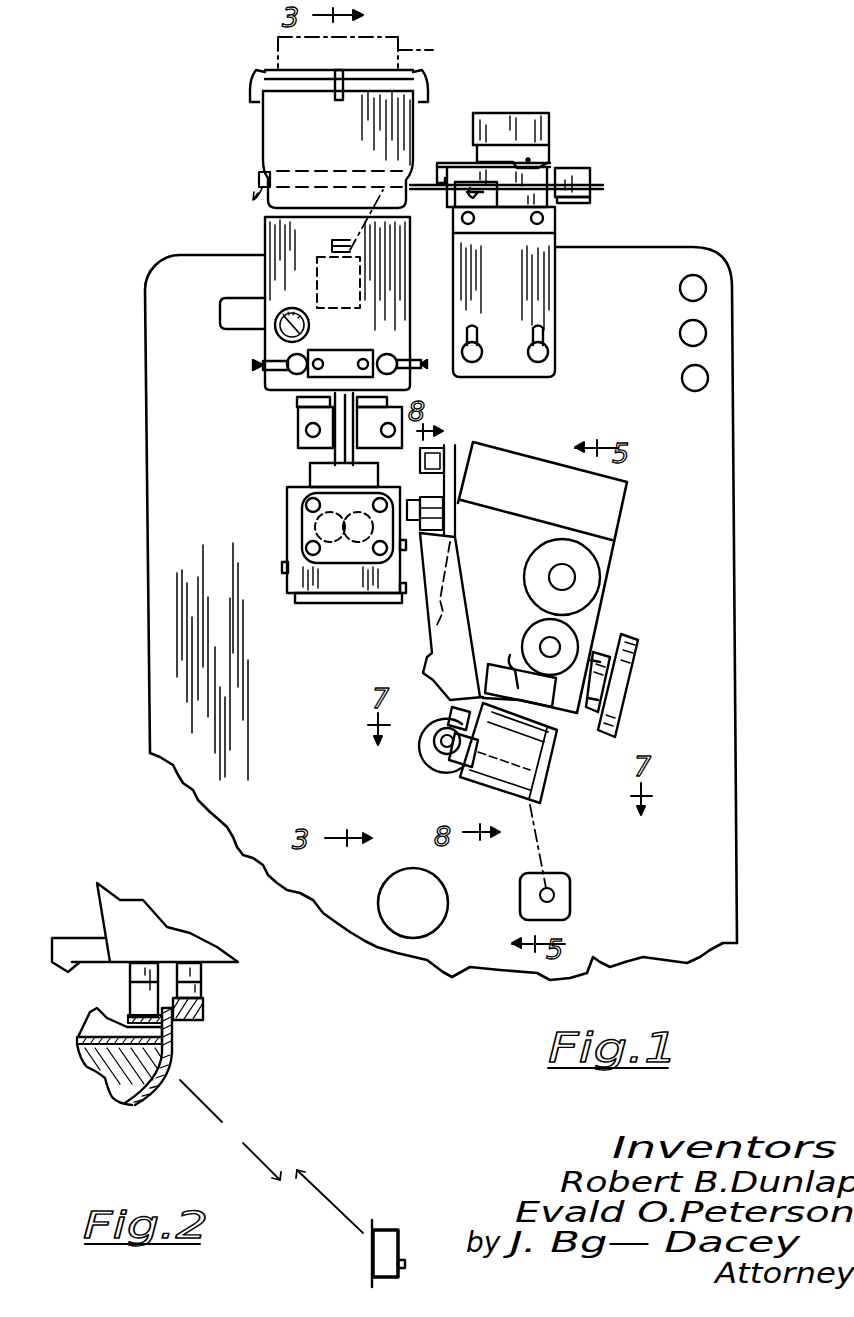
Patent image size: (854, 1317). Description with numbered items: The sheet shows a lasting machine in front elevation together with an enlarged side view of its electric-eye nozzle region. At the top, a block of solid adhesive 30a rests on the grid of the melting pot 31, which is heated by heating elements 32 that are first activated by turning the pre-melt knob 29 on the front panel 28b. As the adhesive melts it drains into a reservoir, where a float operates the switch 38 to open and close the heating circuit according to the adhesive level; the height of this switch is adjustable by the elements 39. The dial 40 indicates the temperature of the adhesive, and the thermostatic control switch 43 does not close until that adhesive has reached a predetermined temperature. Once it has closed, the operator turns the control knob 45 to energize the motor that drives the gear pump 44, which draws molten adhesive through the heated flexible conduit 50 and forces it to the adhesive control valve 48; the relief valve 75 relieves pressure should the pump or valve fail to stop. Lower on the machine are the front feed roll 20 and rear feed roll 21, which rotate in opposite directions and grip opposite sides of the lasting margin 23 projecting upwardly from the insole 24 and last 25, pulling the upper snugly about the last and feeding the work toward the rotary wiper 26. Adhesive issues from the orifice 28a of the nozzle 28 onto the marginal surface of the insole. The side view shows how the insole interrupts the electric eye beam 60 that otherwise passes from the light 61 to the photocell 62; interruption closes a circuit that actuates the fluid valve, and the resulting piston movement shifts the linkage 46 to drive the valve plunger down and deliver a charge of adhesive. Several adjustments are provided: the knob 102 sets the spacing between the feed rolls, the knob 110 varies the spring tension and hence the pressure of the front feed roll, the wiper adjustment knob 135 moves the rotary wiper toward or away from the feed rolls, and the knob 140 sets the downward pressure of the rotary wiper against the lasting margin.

In FIG. 1, the front feed roll 20 is at (468, 780).
In FIG. 2, the front feed roll 20 is at (73, 977).
In FIG. 2, the rear feed roll 21 is at (203, 1003).
In FIG. 2, the lasting margin 23 is at (203, 1020).
In FIG. 2, the insole 24 is at (77, 1039).
In FIG. 2, the last 25 is at (98, 1080).
In FIG. 1, the rotary wiper 26 is at (440, 752).
In FIG. 1, the nozzle 28 is at (447, 777).
In FIG. 2, the nozzle 28 is at (90, 1023).
In FIG. 2, the orifice 28a is at (172, 1052).
In FIG. 1, the front panel 28b is at (180, 556).
In FIG. 1, the pre-melt knob 29 is at (705, 333).
In FIG. 1, the block of solid adhesive 30a is at (383, 51).
In FIG. 1, the melting pot 31 is at (262, 130).
In FIG. 1, the heating elements 32 is at (257, 174).
In FIG. 1, the switch 38 is at (548, 123).
In FIG. 1, the adjusting elements 39 is at (555, 345).
In FIG. 1, the dial 40 is at (264, 342).
In FIG. 1, the thermostatic control switch 43 is at (232, 305).
In FIG. 1, the gear pump 44 is at (302, 523).
In FIG. 1, the control knob 45 is at (705, 378).
In FIG. 1, the linkage / control knob 46 is at (705, 290).
In FIG. 1, the adhesive control valve 48 is at (428, 631).
In FIG. 1, the heated flexible conduit 50 is at (298, 445).
In FIG. 1, the electric eye beam 60 is at (540, 840).
In FIG. 2, the electric eye beam 60 is at (222, 1122).
In FIG. 1, the light 61 is at (520, 655).
In FIG. 2, the light 61 is at (70, 940).
In FIG. 1, the photocell 62 is at (570, 890).
In FIG. 2, the photocell 62 is at (388, 1228).
In FIG. 1, the relief valve 75 is at (310, 483).
In FIG. 1, the knob 102 is at (566, 636).
In FIG. 1, the knob 110 is at (590, 578).
In FIG. 1, the wiper adjustment knob 135 is at (626, 670).
In FIG. 1, the knob 140 is at (393, 903).